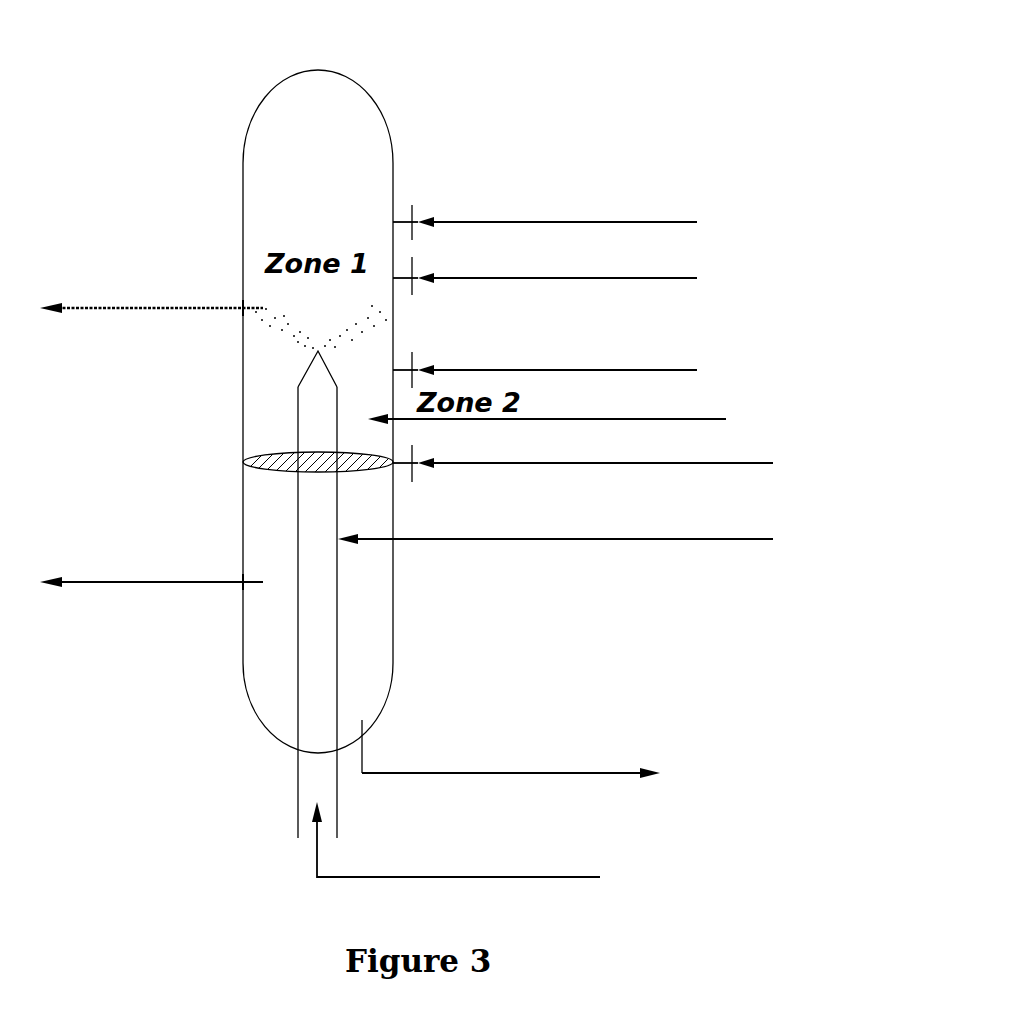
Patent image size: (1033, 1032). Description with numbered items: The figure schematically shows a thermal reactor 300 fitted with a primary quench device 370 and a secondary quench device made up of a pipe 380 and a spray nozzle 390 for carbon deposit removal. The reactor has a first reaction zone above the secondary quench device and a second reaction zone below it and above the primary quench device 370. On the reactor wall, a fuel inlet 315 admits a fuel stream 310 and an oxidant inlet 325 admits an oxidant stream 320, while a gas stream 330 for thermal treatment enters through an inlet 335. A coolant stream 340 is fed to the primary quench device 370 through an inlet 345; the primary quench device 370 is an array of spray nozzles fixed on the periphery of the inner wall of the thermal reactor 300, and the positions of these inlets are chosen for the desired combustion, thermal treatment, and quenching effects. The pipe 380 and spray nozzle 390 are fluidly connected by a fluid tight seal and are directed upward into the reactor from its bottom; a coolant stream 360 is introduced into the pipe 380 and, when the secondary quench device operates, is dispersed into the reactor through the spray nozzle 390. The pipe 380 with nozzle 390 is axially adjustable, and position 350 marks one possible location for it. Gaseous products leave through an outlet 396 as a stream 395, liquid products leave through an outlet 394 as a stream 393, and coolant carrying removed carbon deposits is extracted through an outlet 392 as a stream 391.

The thermal reactor 300 is at (332, 68).
The fuel stream 310 is at (545, 208).
The fuel inlet 315 is at (395, 210).
The oxidant stream 320 is at (545, 263).
The oxidant inlet 325 is at (393, 272).
The gas stream 330 is at (545, 357).
The inlet 335 is at (393, 367).
The coolant stream 340 is at (583, 450).
The inlet 345 is at (393, 463).
The position 350 is at (555, 554).
The coolant stream 360 is at (456, 839).
The primary quench device 370 is at (243, 462).
The pipe 380 is at (312, 640).
The spray nozzle 390 is at (318, 351).
The stream 391 is at (511, 759).
The outlet 392 is at (365, 737).
The stream 393 is at (151, 569).
The outlet 394 is at (243, 577).
The stream 395 is at (151, 294).
The outlet 396 is at (242, 307).